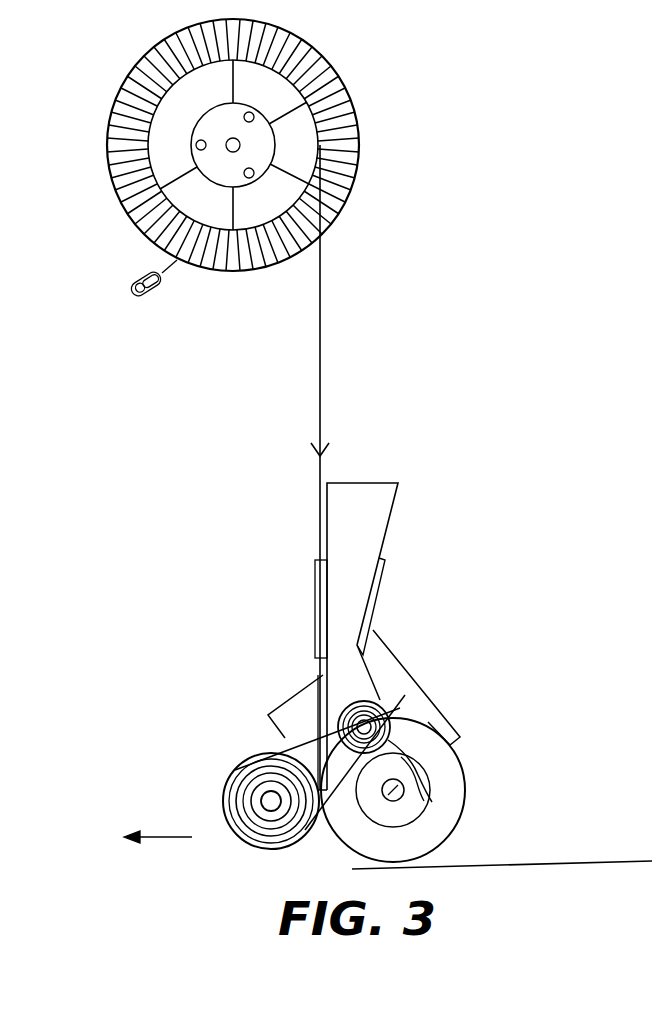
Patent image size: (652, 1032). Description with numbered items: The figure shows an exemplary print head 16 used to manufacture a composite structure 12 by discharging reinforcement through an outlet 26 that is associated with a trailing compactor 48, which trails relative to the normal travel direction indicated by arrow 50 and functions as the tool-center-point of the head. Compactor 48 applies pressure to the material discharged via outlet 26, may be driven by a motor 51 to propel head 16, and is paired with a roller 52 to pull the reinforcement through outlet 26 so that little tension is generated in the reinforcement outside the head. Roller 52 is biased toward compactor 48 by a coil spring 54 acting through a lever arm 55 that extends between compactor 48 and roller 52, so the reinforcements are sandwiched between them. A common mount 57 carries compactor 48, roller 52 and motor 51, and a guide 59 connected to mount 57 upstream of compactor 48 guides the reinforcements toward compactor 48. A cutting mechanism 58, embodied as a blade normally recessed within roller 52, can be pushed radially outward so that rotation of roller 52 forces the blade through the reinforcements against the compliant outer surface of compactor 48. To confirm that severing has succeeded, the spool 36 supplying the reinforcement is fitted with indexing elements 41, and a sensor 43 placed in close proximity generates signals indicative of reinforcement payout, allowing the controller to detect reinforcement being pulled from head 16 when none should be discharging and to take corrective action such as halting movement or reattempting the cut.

The composite structure 12 is at (620, 858).
The print head 16 is at (465, 124).
The outlet 26 is at (317, 838).
The spool 36 is at (270, 100).
The indexing elements 41 is at (356, 149).
The sensor 43 is at (131, 290).
The trailing compactor 48 is at (441, 814).
The arrow 50 is at (167, 836).
The motor 51 is at (395, 687).
The roller 52 is at (250, 754).
The coil spring 54 is at (386, 710).
The lever arm 55 is at (350, 771).
The common mount 57 is at (360, 527).
The cutting mechanism 58 is at (240, 776).
The guide 59 is at (377, 594).